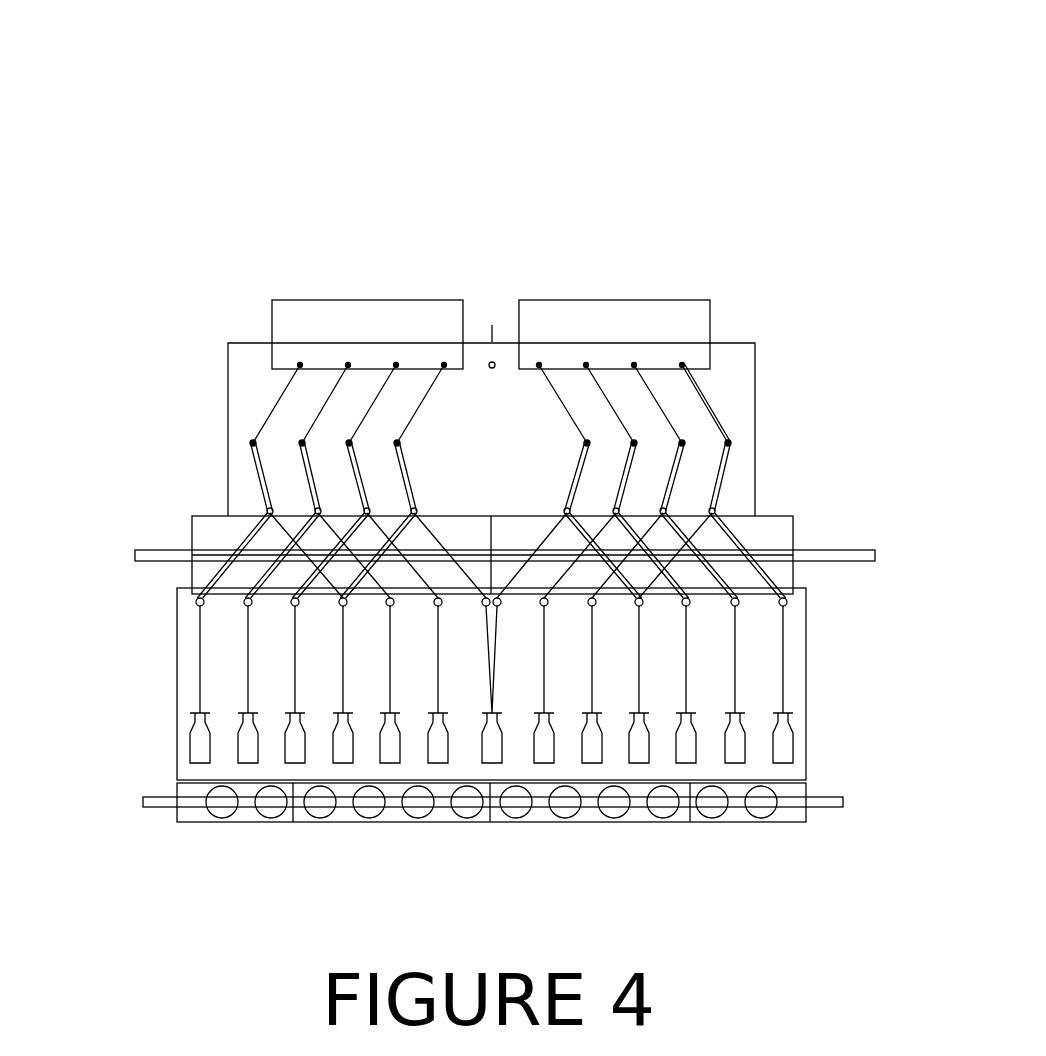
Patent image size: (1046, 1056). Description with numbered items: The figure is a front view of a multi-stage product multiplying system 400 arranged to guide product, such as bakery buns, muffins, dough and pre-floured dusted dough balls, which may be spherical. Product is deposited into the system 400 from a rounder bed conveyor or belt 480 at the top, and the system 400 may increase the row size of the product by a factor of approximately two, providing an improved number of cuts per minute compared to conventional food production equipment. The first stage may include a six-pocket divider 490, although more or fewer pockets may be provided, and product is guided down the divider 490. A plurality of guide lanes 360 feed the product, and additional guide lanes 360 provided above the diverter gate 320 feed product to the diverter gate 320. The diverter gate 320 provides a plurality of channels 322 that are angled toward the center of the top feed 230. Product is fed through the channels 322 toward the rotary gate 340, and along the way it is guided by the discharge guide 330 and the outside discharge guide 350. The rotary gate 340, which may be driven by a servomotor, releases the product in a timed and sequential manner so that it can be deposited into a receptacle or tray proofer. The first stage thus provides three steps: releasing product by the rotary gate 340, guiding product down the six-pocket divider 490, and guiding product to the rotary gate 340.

The multi-stage product multiplying system 400 is at (502, 412).
The rounder bed conveyor 480 is at (325, 321).
The six-pocket divider 490 is at (730, 391).
The guide lanes 360 is at (280, 395).
The channels 322 is at (627, 541).
The diverter gate 320 is at (795, 550).
The top feed 230 is at (355, 561).
The outside discharge guide 350 is at (783, 651).
The discharge guide 330 is at (343, 685).
The rotary gate 340 is at (807, 795).